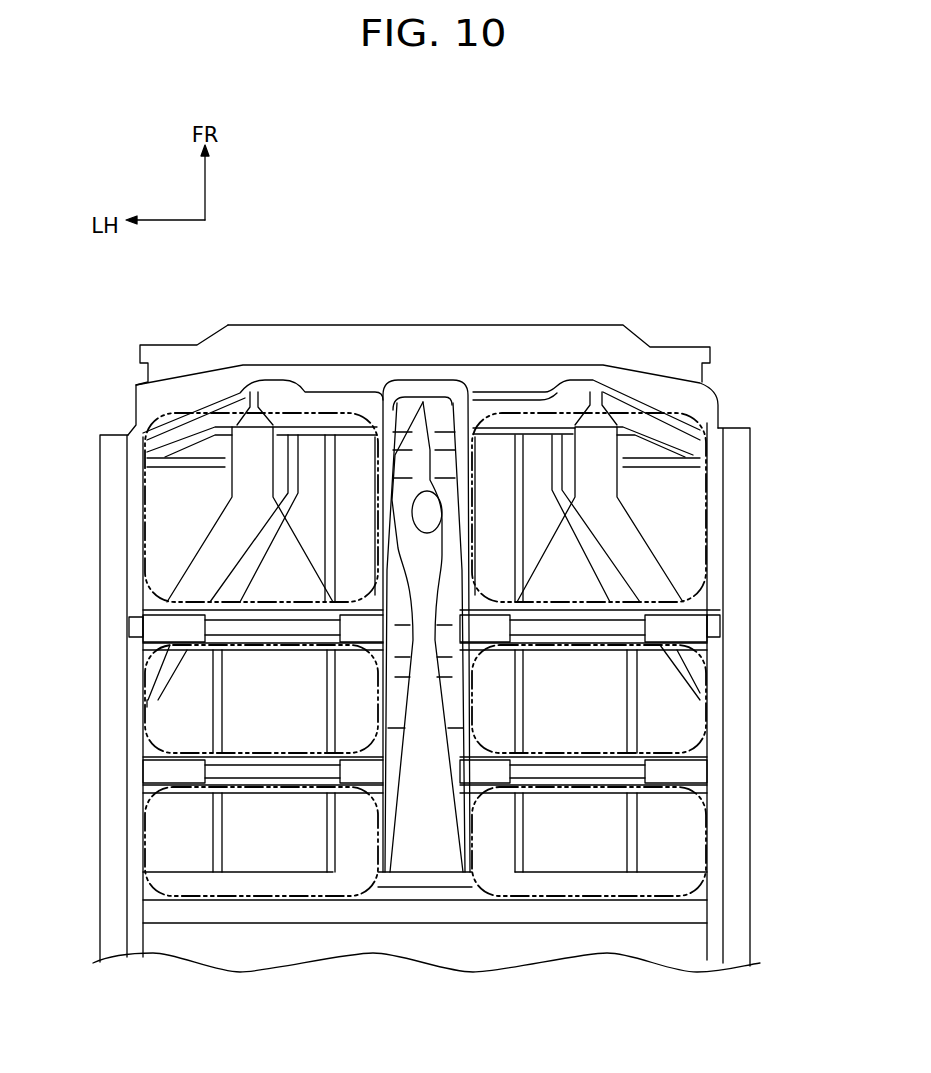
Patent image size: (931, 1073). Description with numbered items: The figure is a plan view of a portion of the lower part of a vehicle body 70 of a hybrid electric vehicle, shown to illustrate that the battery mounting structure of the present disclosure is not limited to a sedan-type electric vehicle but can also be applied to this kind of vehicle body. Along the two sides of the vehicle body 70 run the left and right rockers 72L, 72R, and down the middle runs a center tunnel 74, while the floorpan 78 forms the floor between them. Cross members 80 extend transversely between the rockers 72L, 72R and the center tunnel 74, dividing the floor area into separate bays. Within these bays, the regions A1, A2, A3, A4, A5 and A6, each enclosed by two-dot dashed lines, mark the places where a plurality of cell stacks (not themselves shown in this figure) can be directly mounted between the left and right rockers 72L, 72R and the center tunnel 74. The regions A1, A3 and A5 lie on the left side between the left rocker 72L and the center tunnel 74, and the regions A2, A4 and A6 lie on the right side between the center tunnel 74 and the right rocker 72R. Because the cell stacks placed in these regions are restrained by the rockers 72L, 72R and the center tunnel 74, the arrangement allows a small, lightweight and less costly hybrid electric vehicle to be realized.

The vehicle body 70 is at (607, 292).
The left rocker 72L is at (115, 728).
The right rocker 72R is at (733, 728).
The center tunnel 74 is at (425, 830).
The floorpan 78 is at (578, 853).
The cross members 80 is at (131, 623).
The region A1 is at (143, 500).
The region A2 is at (703, 500).
The region A3 is at (147, 677).
The region A4 is at (703, 677).
The region A5 is at (142, 830).
The region A6 is at (708, 830).